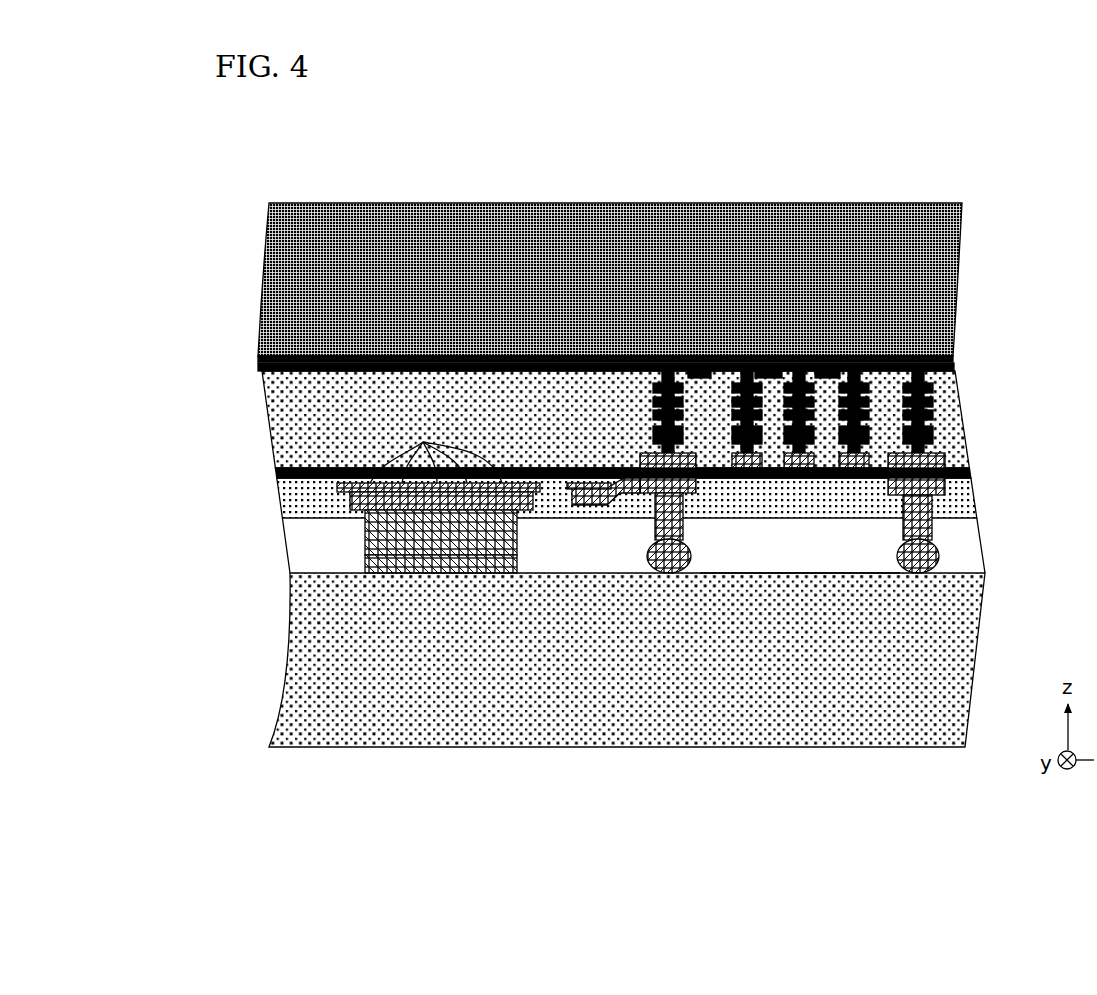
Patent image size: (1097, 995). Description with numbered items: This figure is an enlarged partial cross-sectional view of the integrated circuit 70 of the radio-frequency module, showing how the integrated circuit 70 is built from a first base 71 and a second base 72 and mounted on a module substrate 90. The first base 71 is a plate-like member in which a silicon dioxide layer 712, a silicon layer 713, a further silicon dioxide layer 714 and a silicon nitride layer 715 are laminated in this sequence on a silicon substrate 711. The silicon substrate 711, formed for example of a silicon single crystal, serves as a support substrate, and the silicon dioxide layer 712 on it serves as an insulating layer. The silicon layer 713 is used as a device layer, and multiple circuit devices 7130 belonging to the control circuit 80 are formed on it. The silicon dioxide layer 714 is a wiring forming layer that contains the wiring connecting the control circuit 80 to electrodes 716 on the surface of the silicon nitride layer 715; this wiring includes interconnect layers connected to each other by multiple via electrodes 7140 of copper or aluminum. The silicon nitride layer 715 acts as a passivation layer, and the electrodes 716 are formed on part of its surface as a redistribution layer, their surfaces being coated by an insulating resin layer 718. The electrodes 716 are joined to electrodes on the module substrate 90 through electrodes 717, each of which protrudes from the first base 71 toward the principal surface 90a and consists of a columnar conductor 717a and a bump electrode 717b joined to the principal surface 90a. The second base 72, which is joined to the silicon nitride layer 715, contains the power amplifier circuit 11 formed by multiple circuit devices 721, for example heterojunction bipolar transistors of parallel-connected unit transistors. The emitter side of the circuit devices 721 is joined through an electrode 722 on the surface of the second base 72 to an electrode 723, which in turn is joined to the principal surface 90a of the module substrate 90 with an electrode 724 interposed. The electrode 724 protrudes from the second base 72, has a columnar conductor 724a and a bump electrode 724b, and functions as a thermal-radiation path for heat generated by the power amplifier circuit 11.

The integrated circuit 70 is at (890, 157).
The first base 71 is at (240, 205).
The silicon substrate 711 is at (956, 272).
The silicon dioxide layer 712 is at (955, 364).
The silicon layer 713 is at (955, 371).
The circuit devices 7130 is at (698, 371).
The via electrodes 7140 is at (926, 377).
The silicon dioxide layer 714 is at (968, 436).
The control circuit 80 is at (860, 313).
The silicon nitride layer 715 is at (957, 473).
The electrodes 716 is at (946, 487).
The resin layer 718 is at (950, 500).
The electrodes 717 is at (1043, 520).
The columnar conductor 717a is at (931, 531).
The bump electrode 717b is at (936, 557).
The second base 72 is at (556, 482).
The power amplifier circuit 11 is at (402, 410).
The circuit devices 721 is at (436, 451).
The electrode 722 is at (521, 484).
The electrode 723 is at (360, 512).
The electrode 724 is at (592, 530).
The columnar conductor 724a is at (517, 535).
The bump electrode 724b is at (517, 565).
The module substrate 90 is at (240, 573).
The principal surface 90a is at (815, 571).